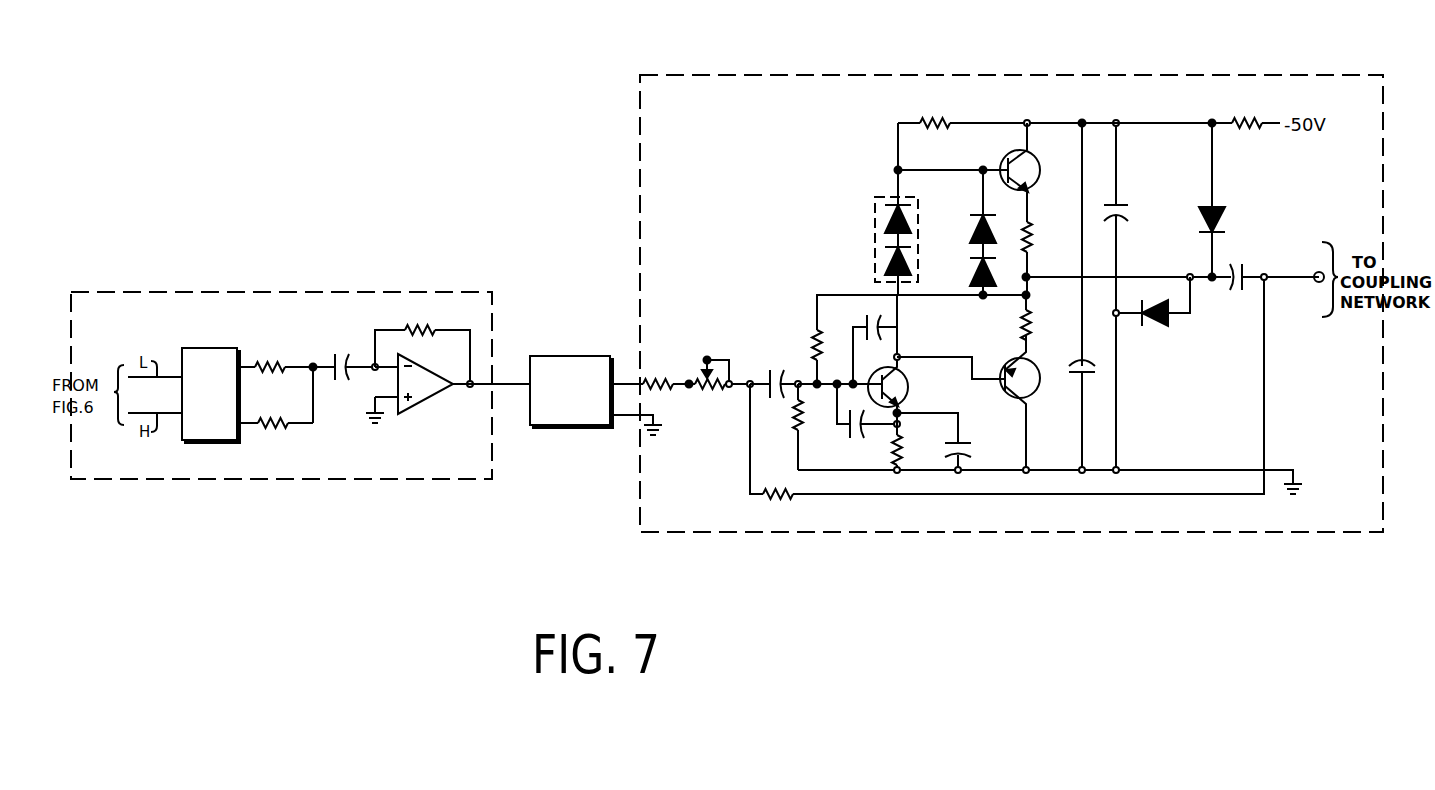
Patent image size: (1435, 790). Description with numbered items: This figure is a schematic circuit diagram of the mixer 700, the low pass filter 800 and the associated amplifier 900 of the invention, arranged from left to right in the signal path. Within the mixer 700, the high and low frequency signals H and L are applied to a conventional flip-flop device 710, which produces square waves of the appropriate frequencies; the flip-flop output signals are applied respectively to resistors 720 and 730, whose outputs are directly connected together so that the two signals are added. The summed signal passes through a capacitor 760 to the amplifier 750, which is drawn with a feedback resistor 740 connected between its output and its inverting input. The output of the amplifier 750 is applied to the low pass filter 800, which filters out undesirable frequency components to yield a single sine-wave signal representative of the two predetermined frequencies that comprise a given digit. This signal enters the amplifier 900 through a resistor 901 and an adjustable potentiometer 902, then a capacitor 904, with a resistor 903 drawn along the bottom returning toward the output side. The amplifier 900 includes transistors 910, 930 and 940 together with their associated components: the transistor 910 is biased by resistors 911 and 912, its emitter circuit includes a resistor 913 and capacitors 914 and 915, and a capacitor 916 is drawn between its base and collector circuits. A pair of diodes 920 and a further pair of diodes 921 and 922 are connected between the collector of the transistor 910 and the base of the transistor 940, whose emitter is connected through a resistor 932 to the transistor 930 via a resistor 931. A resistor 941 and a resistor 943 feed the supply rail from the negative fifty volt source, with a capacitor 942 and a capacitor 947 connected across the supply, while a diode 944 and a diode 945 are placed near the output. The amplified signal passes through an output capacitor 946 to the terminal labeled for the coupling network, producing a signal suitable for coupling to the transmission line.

The mixer 700 is at (307, 290).
The flip-flop device 710 is at (222, 348).
The resistor 720 is at (282, 361).
The resistor 730 is at (272, 427).
The feedback resistor 740 is at (422, 320).
The amplifier 750 is at (426, 399).
The capacitor 760 is at (345, 355).
The low pass filter 800 is at (573, 356).
The amplifier 900 is at (1270, 75).
The resistor 901 is at (656, 378).
The potentiometer 902 is at (719, 389).
The resistor 903 is at (1007, 401).
The capacitor 904 is at (787, 365).
The transistor 910 is at (909, 385).
The resistor 911 is at (905, 339).
The resistor 912 is at (779, 427).
The resistor 913 is at (917, 441).
The capacitor 914 is at (965, 447).
The capacitor 915 is at (865, 423).
The capacitor 916 is at (867, 315).
The diode pair 920 is at (875, 237).
The diode 921 is at (970, 264).
The diode 922 is at (976, 213).
The transistor 930 is at (1031, 392).
The resistor 931 is at (1047, 323).
The resistor 932 is at (1047, 258).
The transistor 940 is at (1010, 156).
The resistor 941 is at (936, 110).
The capacitor 942 is at (1128, 212).
The resistor 943 is at (1244, 112).
The diode 944 is at (1226, 213).
The diode 945 is at (1162, 328).
The capacitor 946 is at (1267, 292).
The capacitor 947 is at (1078, 364).